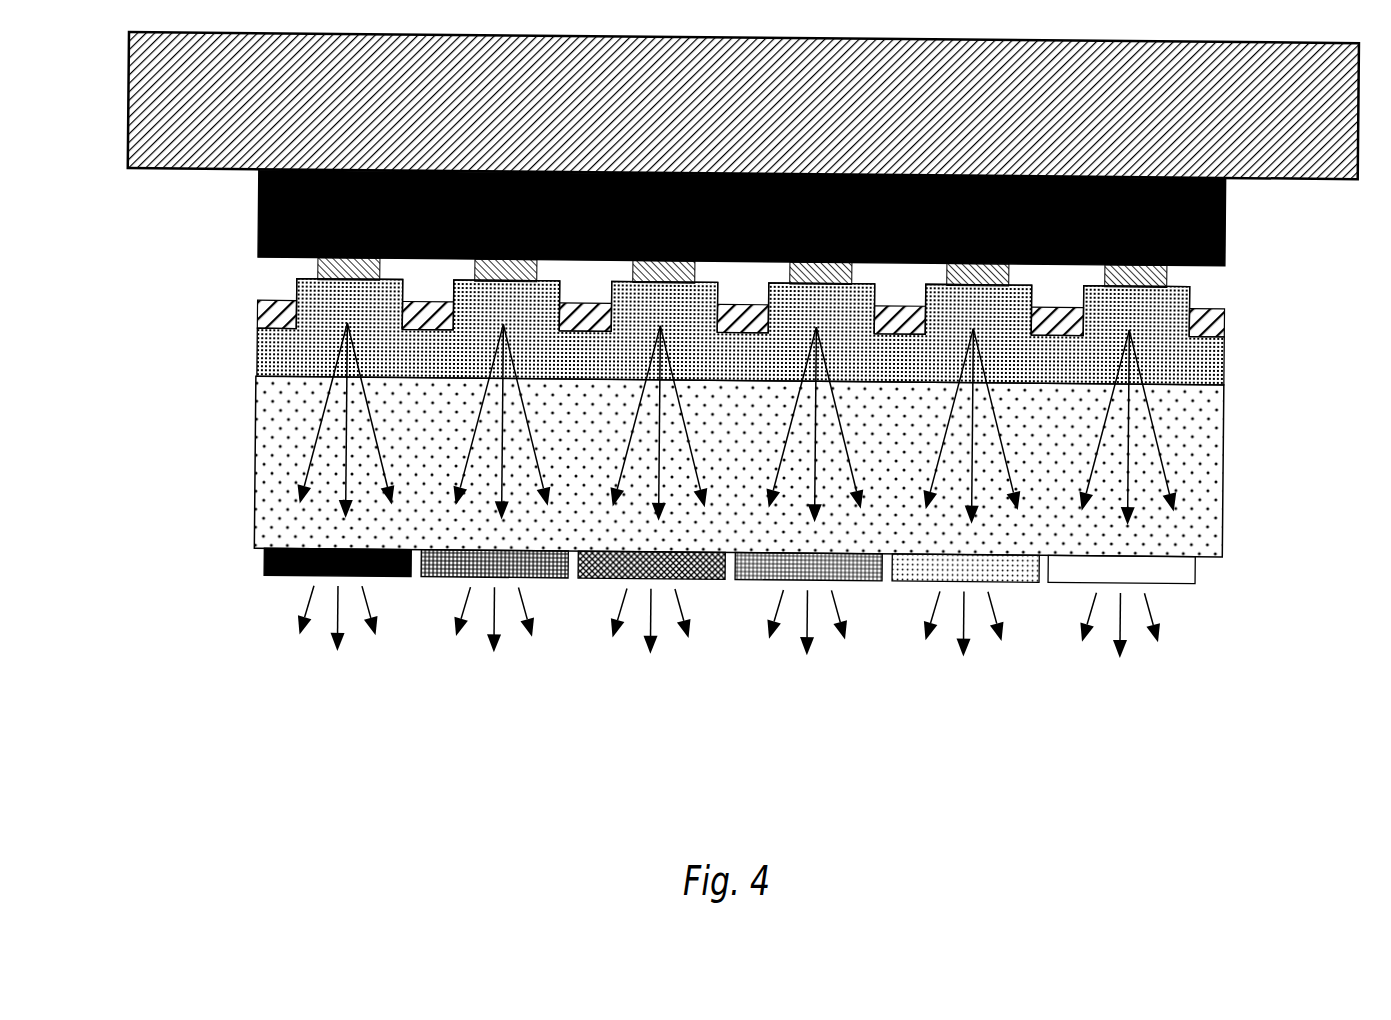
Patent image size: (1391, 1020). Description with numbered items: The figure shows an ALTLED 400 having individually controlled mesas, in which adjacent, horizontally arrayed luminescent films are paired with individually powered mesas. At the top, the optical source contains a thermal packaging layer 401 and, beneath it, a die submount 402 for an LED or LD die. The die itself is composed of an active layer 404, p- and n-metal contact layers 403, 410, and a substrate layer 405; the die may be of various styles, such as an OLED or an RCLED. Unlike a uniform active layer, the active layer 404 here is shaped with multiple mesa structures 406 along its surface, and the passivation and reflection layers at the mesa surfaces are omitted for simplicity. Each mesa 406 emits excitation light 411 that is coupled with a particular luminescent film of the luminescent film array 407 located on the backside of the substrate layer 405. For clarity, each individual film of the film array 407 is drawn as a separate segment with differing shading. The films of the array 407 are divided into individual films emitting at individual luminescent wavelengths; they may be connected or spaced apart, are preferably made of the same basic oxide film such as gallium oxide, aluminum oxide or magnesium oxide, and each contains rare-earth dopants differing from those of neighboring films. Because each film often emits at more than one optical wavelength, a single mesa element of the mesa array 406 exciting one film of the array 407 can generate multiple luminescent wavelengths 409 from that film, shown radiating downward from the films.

The ALTLED 400 is at (711, 374).
The thermal packaging layer 401 is at (181, 192).
The die submount 402 is at (1245, 220).
The p-metal contact layer 403 is at (289, 266).
The active layer 404 is at (243, 356).
The substrate layer 405 is at (243, 467).
The mesa structures 406 is at (1210, 283).
The luminescent film array 407 is at (1218, 570).
The luminescent wavelengths 409 is at (1194, 633).
The n-metal contact layer 410 is at (1244, 327).
The excitation light 411 is at (1182, 447).